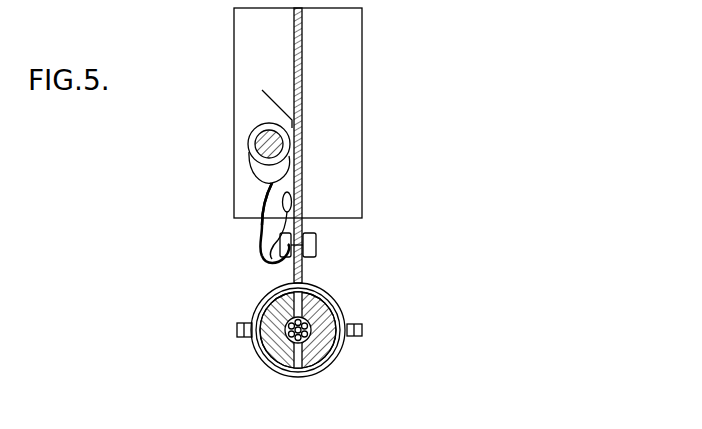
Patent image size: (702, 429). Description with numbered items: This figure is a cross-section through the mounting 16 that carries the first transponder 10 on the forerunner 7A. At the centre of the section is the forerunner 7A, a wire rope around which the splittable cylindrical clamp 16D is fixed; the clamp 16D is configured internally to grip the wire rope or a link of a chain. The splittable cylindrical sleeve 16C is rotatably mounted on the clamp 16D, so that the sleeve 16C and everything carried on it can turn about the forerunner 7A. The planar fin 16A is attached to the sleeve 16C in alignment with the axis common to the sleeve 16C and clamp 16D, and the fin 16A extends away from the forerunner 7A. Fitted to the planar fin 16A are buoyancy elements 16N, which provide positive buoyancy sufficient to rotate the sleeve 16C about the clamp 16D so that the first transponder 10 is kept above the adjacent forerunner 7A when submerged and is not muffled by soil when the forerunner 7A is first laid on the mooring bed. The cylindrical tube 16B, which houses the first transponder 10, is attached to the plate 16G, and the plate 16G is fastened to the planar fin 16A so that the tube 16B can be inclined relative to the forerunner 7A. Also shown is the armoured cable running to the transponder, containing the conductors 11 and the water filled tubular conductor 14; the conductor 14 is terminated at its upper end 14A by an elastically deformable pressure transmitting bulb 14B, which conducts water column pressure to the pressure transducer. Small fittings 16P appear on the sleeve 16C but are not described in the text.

The mounting 16 is at (485, 152).
The buoyancy elements 16N is at (262, 72).
The planar fin 16A is at (302, 62).
The plate 16G is at (290, 118).
The first transponder 10 is at (253, 130).
The cylindrical tube 16B is at (250, 163).
The pressure transmitting bulb 14B is at (280, 205).
The upper end 14A is at (267, 222).
The water filled tubular conductor 14 is at (260, 239).
The conductors 11 is at (262, 262).
The splittable cylindrical sleeve 16C is at (251, 318).
The splittable cylindrical clamp 16D is at (257, 346).
The forerunner 7A is at (307, 319).
The bracket 16P is at (240, 338).